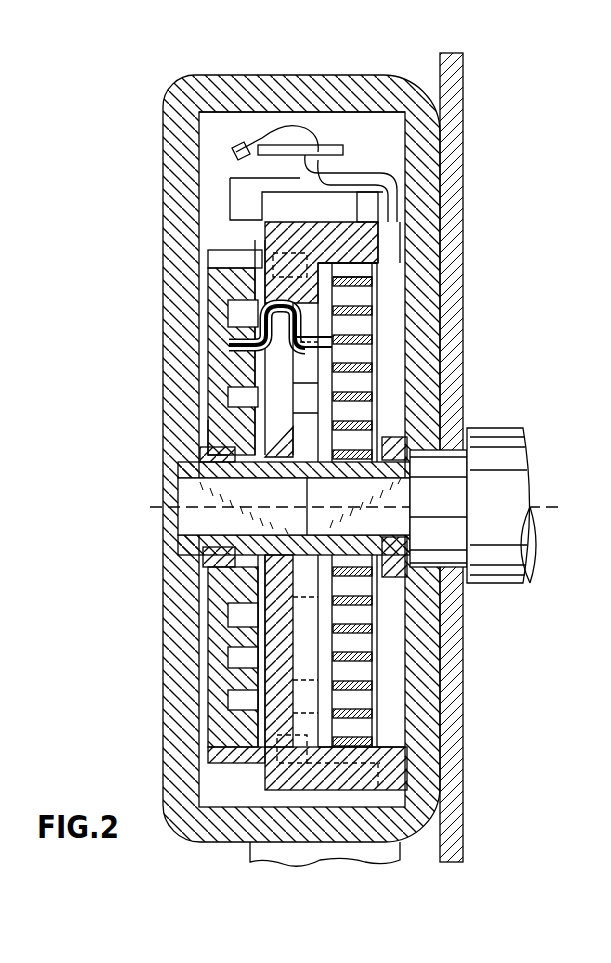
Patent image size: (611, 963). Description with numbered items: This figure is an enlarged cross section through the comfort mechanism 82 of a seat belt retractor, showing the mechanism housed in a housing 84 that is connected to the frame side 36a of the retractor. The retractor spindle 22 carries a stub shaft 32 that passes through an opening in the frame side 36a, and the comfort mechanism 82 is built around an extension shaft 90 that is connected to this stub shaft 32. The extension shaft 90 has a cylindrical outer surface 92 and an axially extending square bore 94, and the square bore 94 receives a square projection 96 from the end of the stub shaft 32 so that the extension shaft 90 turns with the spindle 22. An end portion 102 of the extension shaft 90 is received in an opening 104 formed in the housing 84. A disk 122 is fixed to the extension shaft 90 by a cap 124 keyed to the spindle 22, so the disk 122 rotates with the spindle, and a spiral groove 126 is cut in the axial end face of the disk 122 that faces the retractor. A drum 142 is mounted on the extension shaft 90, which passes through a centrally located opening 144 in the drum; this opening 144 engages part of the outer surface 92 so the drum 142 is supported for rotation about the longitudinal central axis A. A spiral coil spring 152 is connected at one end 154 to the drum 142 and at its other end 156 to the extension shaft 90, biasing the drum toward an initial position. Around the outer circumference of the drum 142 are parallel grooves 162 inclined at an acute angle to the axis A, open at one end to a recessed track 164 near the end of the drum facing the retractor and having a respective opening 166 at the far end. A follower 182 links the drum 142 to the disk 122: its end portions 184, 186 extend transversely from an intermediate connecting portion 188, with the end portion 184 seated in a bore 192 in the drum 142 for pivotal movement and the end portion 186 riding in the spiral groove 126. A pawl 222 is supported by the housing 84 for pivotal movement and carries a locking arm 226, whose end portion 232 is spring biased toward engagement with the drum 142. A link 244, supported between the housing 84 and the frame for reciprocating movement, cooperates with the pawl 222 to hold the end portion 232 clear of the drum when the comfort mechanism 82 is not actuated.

The comfort mechanism 82 is at (158, 112).
The housing 84 is at (263, 90).
The frame side 36a is at (450, 92).
The opening 166 is at (280, 262).
The locking arm 226 is at (328, 160).
The drum 142 is at (340, 242).
The end portion of the locking arm 232 is at (446, 205).
The pawl 222 is at (224, 194).
The bore 192 is at (214, 262).
The disk 122 is at (213, 285).
The spiral groove 126 is at (222, 316).
The end portion of the follower 186 is at (220, 345).
The cap 124 is at (205, 440).
The extension shaft 90 is at (168, 463).
The opening 104 is at (176, 490).
The longitudinal central axis A is at (152, 512).
The end portion of the extension shaft 102 is at (182, 549).
The square bore 94 is at (205, 573).
The grooves 162 is at (410, 222).
The end of the spiral coil spring 154 is at (395, 258).
The end portion of the follower 184 is at (310, 305).
The spiral coil spring 152 is at (372, 312).
The intermediate connecting portion 188 is at (292, 338).
The follower 182 is at (300, 357).
The cylindrical outer surface 92 is at (368, 490).
The square projection 96 is at (412, 445).
The spindle 22 is at (500, 462).
The stub shaft 32 is at (453, 527).
The end of the spiral coil spring 156 is at (380, 570).
The opening 144 is at (355, 560).
The recessed track 164 is at (405, 750).
The link 244 is at (250, 860).